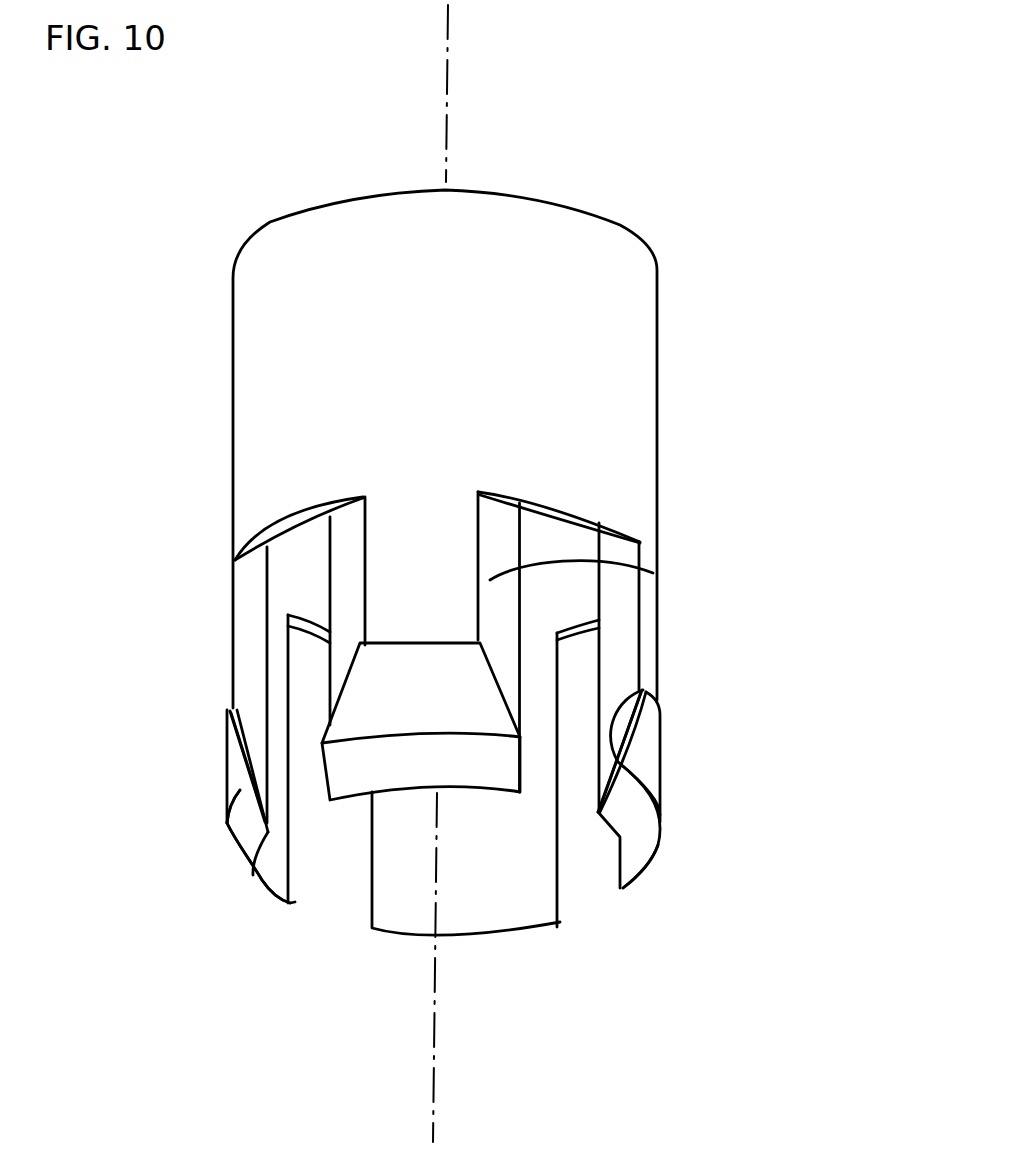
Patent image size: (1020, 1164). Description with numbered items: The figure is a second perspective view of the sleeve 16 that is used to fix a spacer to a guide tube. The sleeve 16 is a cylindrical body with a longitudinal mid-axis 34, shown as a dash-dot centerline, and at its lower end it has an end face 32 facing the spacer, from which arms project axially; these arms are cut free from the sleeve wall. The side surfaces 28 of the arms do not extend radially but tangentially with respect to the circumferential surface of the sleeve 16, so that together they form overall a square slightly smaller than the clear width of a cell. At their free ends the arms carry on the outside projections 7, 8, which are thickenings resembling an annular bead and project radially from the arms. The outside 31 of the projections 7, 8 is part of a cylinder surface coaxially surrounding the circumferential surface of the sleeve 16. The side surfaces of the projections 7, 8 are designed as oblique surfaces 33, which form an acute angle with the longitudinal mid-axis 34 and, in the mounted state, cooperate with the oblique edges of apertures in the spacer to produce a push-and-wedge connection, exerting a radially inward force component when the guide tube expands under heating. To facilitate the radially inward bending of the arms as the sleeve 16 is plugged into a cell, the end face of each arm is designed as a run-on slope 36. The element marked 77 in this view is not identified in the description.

The projection 7 is at (467, 796).
The projection 8 is at (214, 762).
The sleeve 16 is at (604, 270).
The side surface 28 is at (346, 567).
The outside 31 is at (648, 776).
The end face 32 is at (293, 520).
The oblique surface 33 is at (641, 690).
The longitudinal mid-axis 34 is at (450, 100).
The run-on slope 36 is at (642, 832).
The central web 77 is at (410, 570).